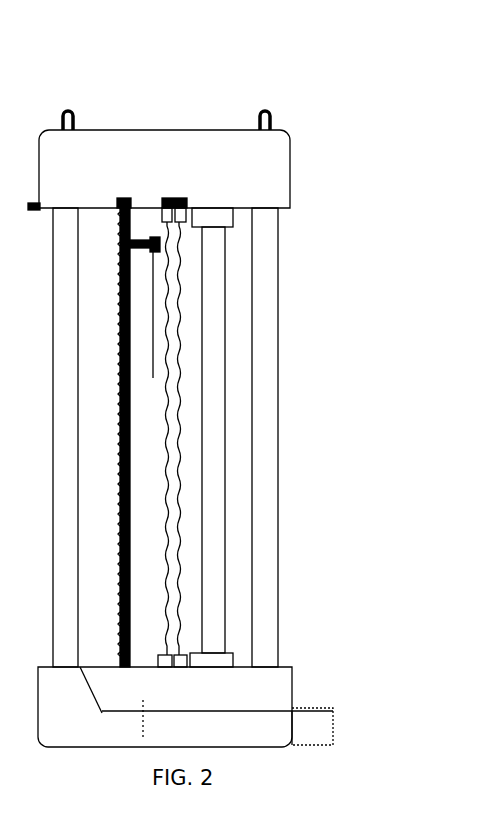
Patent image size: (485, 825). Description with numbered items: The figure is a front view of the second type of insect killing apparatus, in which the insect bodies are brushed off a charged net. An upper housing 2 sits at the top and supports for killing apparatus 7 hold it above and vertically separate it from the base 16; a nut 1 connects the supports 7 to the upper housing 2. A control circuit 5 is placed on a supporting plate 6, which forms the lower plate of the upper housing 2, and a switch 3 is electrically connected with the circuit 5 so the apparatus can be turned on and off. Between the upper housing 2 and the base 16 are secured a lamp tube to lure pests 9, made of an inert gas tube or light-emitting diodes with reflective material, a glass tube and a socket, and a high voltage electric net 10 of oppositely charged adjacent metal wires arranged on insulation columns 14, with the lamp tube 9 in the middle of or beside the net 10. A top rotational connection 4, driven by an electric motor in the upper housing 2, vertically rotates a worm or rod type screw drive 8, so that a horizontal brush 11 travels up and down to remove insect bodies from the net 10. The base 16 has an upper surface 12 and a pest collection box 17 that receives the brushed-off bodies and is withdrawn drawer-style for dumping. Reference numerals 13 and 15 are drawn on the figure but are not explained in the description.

The nut 1 is at (75, 120).
The upper housing 2 is at (122, 130).
The switch 3 is at (42, 207).
The top rotational connection 4 is at (132, 198).
The control circuit 5 is at (187, 203).
The supporting plate 6 is at (250, 208).
The supports for killing apparatus 7 is at (280, 222).
The screw drive 8 is at (172, 222).
The lamp tube to lure pests 9 is at (225, 293).
The high voltage electric net 10 is at (180, 335).
The horizontal brush 11 is at (153, 378).
The upper surface 12 is at (85, 667).
The lower connector 13 is at (168, 655).
The insulation columns 14 is at (218, 710).
The lower chamber 15 is at (233, 710).
The base 16 is at (293, 708).
The pest collection box 17 is at (297, 706).